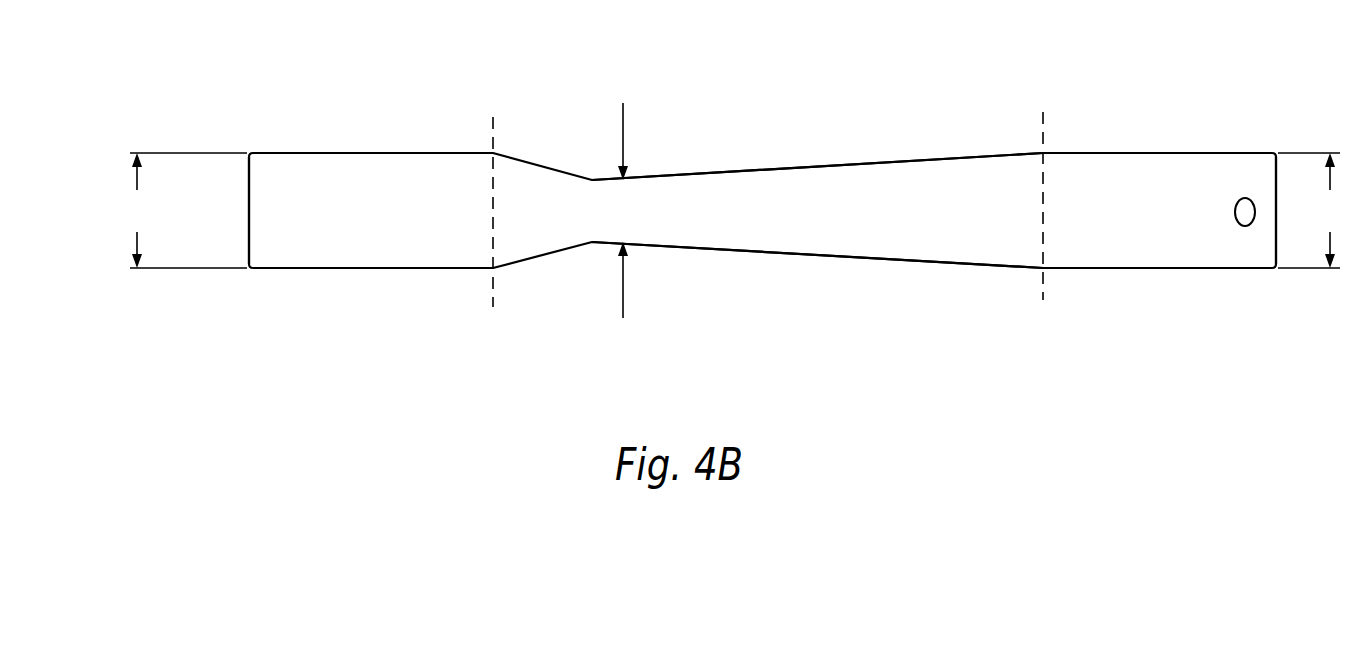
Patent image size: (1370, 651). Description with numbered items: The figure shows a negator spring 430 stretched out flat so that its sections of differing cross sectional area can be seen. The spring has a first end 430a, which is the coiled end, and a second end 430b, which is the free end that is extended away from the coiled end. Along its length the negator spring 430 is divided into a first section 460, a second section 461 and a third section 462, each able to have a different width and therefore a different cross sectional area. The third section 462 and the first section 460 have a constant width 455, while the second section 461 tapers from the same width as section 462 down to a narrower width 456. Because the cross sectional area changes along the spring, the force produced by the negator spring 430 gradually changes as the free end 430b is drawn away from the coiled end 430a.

The negator spring 430 is at (379, 142).
The first end 430a is at (247, 200).
The second end 430b is at (1277, 187).
The constant width 455 is at (733, 210).
The narrower width 456 is at (627, 178).
The first section 460 is at (335, 250).
The second section 461 is at (812, 238).
The third section 462 is at (1167, 245).